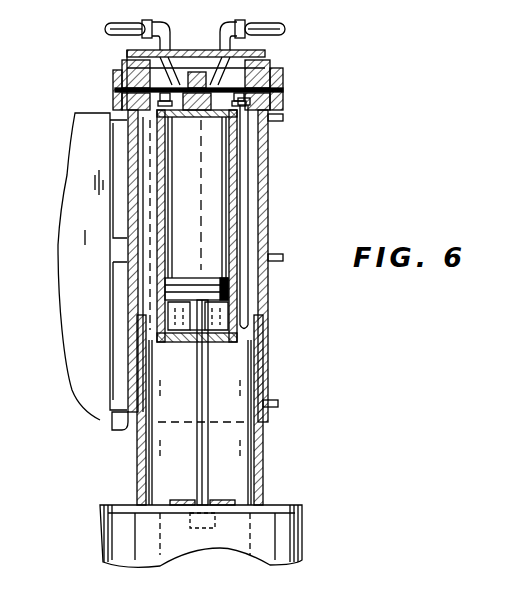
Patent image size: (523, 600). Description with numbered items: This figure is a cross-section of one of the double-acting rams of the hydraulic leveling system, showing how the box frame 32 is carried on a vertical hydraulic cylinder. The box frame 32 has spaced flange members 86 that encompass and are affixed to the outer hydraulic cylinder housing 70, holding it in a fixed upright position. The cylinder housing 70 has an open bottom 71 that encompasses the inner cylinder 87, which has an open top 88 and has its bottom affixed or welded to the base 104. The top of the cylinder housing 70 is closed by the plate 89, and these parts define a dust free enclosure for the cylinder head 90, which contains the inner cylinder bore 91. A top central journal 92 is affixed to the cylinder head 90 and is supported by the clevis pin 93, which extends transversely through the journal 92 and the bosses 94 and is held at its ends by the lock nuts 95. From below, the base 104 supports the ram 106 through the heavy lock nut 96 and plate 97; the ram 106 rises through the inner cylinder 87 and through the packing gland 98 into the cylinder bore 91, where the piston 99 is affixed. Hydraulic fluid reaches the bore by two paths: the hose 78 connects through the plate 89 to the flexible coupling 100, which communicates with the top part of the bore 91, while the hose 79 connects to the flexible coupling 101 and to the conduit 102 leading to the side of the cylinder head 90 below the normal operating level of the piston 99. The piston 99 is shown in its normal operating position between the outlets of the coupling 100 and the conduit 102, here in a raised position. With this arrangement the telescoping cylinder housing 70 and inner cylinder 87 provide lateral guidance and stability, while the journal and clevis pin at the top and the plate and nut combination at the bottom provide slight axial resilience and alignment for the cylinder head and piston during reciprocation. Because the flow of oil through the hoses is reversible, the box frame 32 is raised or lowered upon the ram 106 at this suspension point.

The box frame 32 is at (70, 133).
The hydraulic cylinder housing 70 is at (268, 236).
The open bottom 71 is at (268, 437).
The hose 78 is at (166, 30).
The hose 79 is at (218, 36).
The flange members 86 is at (283, 404).
The inner cylinder 87 is at (137, 476).
The open top 88 is at (240, 300).
The plate 89 is at (250, 44).
The cylinder head 90 is at (127, 237).
The inner cylinder bore 91 is at (237, 196).
The top central journal 92 is at (265, 54).
The clevis pin 93 is at (283, 90).
The bosses 94 is at (122, 70).
The lock nuts 95 is at (113, 80).
The heavy lock nut 96 is at (212, 528).
The plate 97 is at (190, 500).
The packing gland 98 is at (192, 342).
The piston 99 is at (228, 284).
The flexible coupling 100 is at (127, 56).
The flexible coupling 101 is at (270, 70).
The conduit 102 is at (248, 145).
The base 104 is at (302, 515).
The ram 106 is at (207, 460).